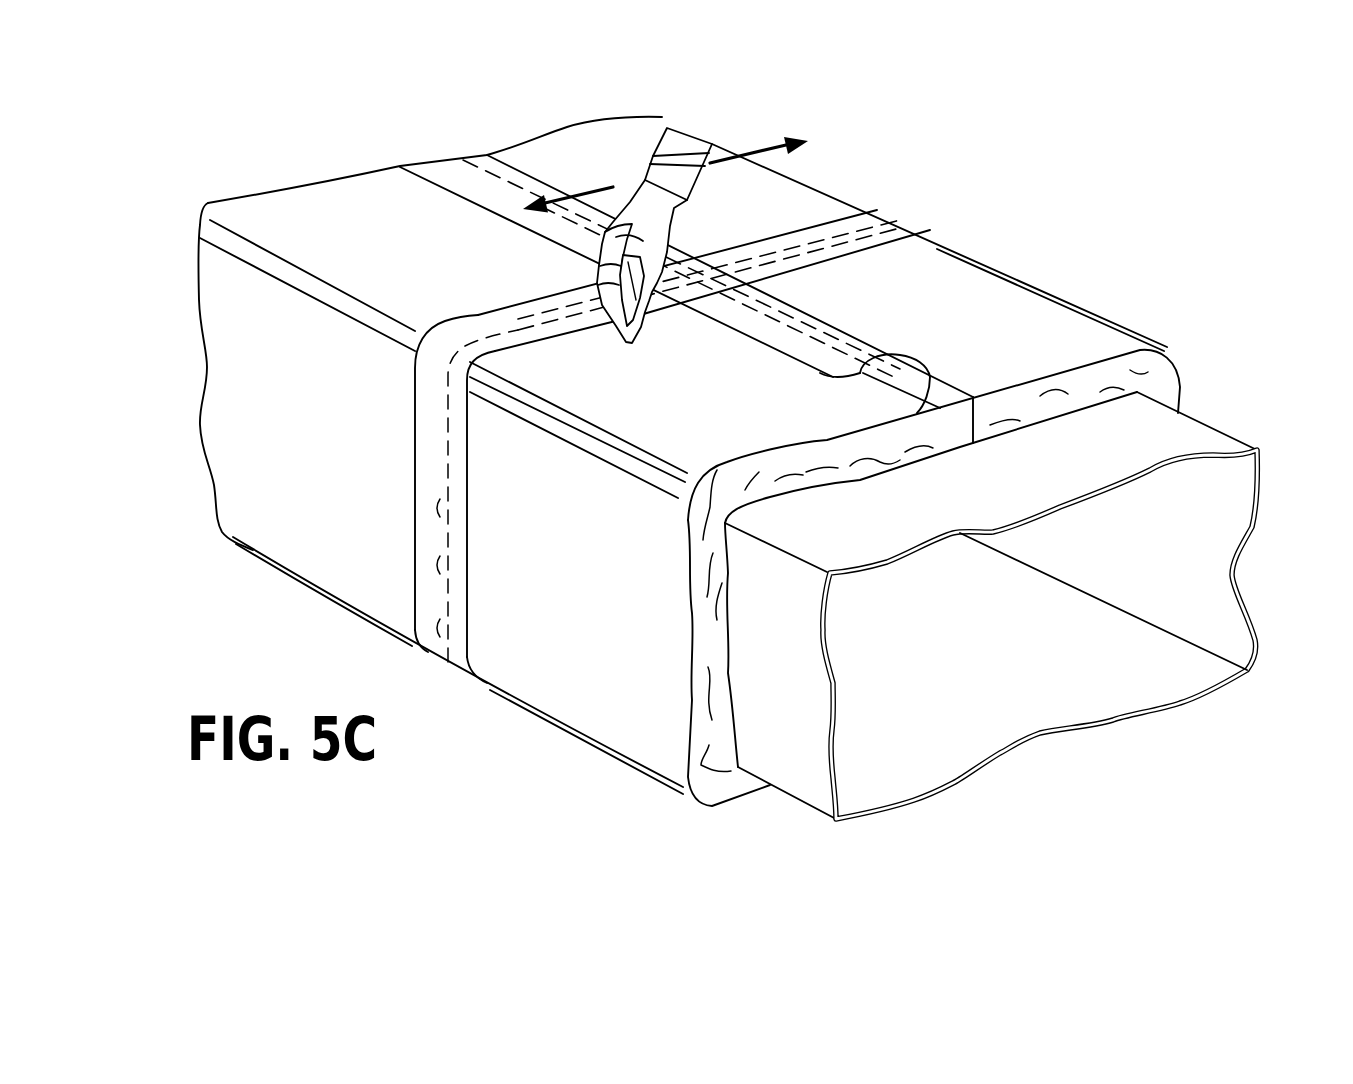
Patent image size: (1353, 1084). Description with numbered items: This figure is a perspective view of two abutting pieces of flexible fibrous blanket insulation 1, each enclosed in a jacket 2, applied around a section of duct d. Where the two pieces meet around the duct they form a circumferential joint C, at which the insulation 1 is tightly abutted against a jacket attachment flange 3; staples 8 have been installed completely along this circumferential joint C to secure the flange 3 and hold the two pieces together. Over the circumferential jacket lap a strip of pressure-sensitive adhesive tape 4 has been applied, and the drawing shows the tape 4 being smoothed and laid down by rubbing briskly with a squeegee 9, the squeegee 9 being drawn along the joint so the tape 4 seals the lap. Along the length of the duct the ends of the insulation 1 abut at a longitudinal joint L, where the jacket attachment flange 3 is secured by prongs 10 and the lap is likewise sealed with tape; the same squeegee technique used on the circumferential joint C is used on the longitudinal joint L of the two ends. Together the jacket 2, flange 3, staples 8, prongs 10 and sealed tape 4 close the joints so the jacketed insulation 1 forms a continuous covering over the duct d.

The flexible fibrous blanket insulation 1 is at (1010, 407).
The jacket 2 is at (543, 688).
The jacket attachment flange 3 is at (555, 300).
The pressure-sensitive adhesive tape 4 is at (807, 243).
The staples 8 is at (468, 338).
The squeegee 9 is at (633, 333).
The prongs 10 is at (558, 216).
The circumferential joint C is at (938, 218).
The longitudinal joint L is at (1007, 393).
The duct d is at (1172, 667).